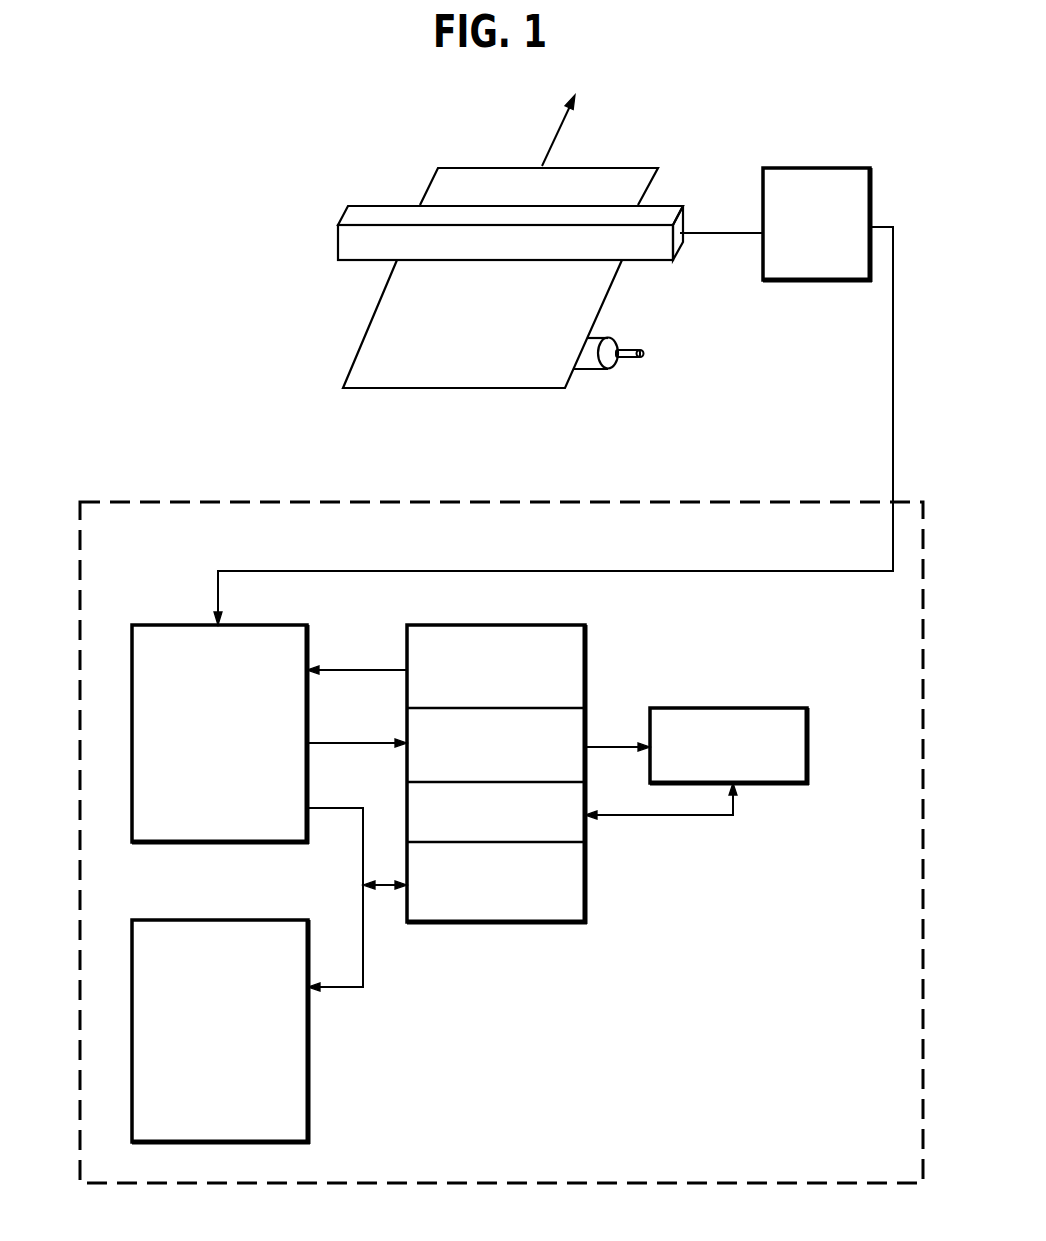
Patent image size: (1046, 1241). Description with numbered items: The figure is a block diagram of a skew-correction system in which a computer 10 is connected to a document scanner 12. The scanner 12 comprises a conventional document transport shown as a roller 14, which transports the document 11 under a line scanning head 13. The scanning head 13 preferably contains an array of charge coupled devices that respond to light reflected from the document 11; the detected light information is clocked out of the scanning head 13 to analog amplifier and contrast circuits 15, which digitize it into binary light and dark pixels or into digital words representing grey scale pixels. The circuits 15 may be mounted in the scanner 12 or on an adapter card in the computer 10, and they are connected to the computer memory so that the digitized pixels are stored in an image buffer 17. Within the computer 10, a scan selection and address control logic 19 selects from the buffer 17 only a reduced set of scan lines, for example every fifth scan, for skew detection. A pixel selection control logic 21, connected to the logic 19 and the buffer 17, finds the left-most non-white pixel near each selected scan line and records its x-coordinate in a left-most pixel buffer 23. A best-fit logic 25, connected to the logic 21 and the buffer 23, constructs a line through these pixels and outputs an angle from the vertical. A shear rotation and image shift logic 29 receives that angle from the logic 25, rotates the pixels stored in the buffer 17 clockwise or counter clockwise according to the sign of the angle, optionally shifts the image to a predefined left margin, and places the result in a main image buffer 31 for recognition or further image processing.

The computer 10 is at (178, 487).
The document 11 is at (635, 167).
The document scanner 12 is at (364, 133).
The line scanning head 13 is at (338, 253).
The roller 14 is at (603, 370).
The analog amplifier and contrast circuits 15 is at (823, 167).
The image buffer 17 is at (177, 623).
The scan selection and address control logic 19 is at (548, 623).
The pixel selection control logic 21 is at (586, 728).
The left-most pixel buffer 23 is at (770, 707).
The best-fit logic 25 is at (587, 793).
The shear rotation and image shift logic 29 is at (587, 877).
The main image buffer 31 is at (177, 920).